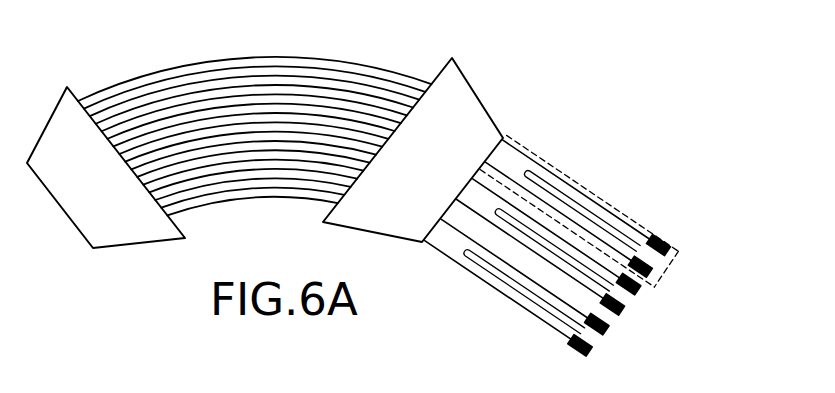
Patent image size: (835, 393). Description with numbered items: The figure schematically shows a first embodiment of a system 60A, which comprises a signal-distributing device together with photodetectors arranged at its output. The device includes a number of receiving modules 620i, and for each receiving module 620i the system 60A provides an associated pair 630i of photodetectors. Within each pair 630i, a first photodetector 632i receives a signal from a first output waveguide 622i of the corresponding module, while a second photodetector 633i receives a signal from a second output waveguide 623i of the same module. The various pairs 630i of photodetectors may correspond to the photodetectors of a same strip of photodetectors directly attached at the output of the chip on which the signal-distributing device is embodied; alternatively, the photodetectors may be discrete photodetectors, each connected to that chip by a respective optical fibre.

The system 60A is at (408, 178).
The receiving module 620i is at (635, 203).
The first output waveguide 622i is at (596, 197).
The second output waveguide 623i is at (598, 242).
The pair of photodetectors 630i is at (657, 233).
The first photodetector 632i is at (675, 260).
The second photodetector 633i is at (657, 277).